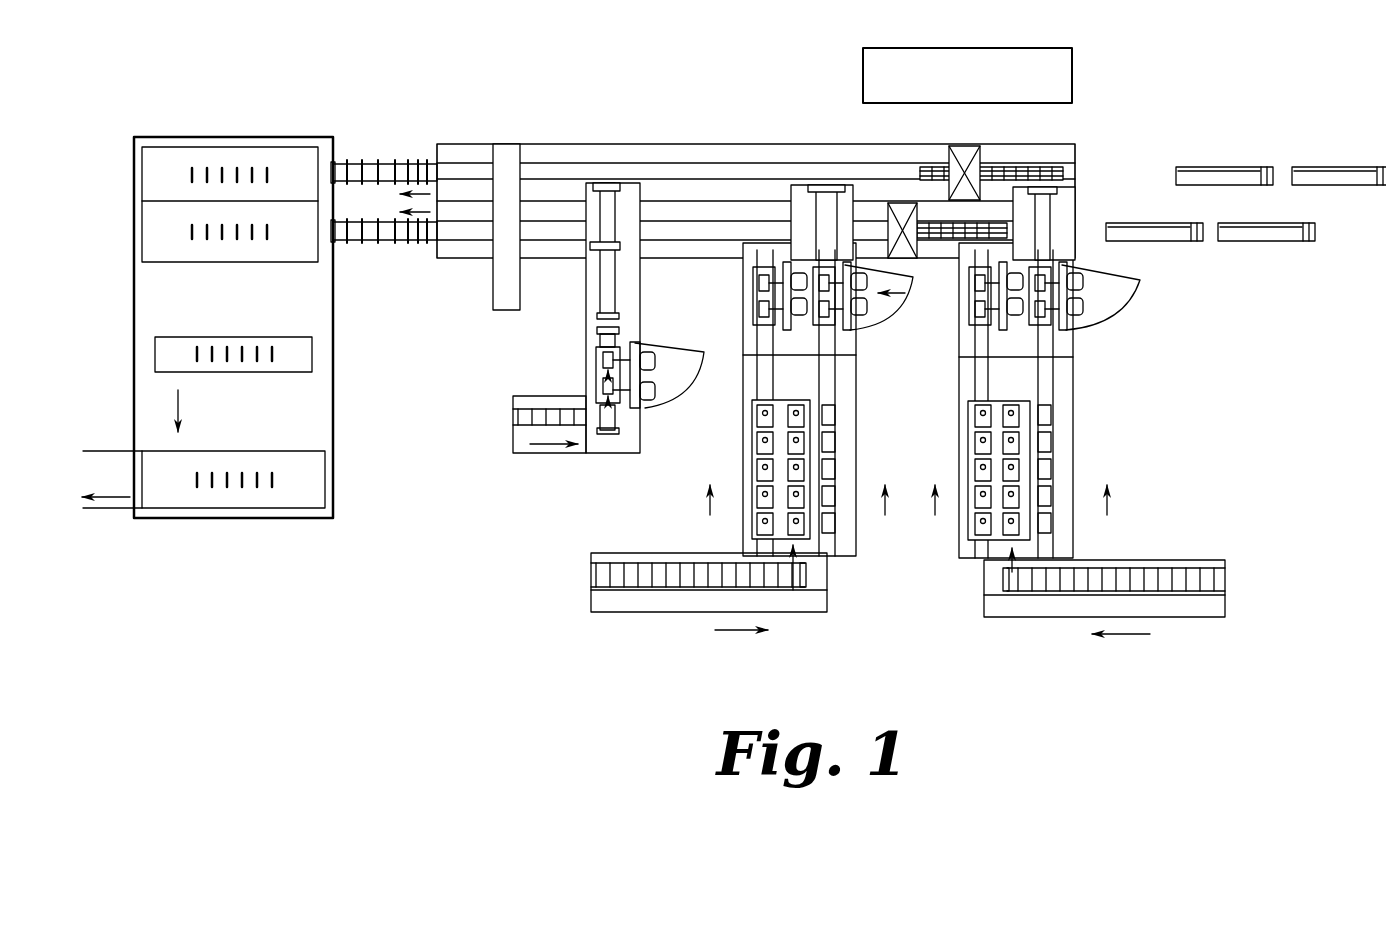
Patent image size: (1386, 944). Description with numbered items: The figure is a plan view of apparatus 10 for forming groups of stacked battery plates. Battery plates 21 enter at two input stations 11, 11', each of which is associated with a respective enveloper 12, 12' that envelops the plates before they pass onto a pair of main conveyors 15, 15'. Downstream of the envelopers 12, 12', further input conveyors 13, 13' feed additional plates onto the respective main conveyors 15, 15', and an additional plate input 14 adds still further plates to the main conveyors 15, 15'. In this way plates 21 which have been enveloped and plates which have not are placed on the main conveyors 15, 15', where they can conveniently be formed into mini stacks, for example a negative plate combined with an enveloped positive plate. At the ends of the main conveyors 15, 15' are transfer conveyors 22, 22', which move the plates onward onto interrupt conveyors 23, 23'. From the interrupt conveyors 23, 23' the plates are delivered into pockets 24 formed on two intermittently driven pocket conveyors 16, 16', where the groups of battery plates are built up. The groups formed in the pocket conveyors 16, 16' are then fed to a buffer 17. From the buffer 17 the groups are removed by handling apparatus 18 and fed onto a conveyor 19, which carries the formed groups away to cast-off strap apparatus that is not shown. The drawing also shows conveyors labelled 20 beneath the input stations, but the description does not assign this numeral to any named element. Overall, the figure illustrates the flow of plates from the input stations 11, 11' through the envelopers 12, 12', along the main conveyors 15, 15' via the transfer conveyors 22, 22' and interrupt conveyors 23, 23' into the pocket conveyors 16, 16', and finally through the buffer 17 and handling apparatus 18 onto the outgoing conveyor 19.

The apparatus for forming groups of stacked battery plates 10 is at (616, 112).
The input station 11 is at (1076, 372).
The input station 11' is at (956, 470).
The enveloper 12 is at (1024, 141).
The enveloper 12' is at (947, 271).
The further input conveyor 13 is at (822, 388).
The further input conveyor 13' is at (704, 469).
The additional plate input 14 is at (580, 331).
The main conveyor 15 is at (756, 118).
The main conveyor 15' is at (725, 278).
The pocket conveyor 16 is at (384, 136).
The pocket conveyor 16' is at (384, 268).
The buffer 17 is at (128, 180).
The handling apparatus 18 is at (125, 360).
The conveyor 19 is at (100, 522).
The conveyor 20 is at (660, 598).
The battery plate 21 is at (1010, 412).
The transfer conveyor 22 is at (756, 176).
The transfer conveyor 22' is at (486, 249).
The interrupt conveyor 23 is at (423, 130).
The interrupt conveyor 23' is at (432, 270).
The pocket 24 is at (355, 168).